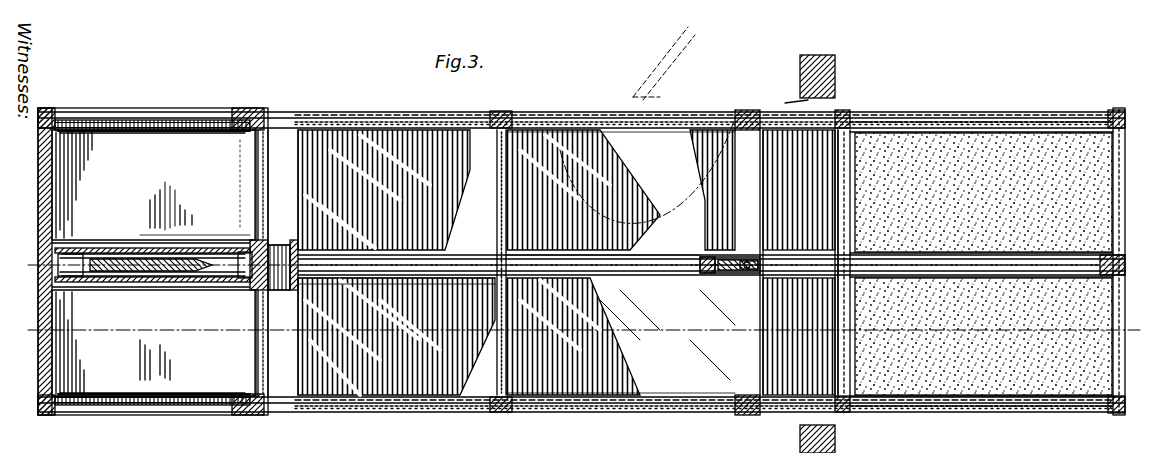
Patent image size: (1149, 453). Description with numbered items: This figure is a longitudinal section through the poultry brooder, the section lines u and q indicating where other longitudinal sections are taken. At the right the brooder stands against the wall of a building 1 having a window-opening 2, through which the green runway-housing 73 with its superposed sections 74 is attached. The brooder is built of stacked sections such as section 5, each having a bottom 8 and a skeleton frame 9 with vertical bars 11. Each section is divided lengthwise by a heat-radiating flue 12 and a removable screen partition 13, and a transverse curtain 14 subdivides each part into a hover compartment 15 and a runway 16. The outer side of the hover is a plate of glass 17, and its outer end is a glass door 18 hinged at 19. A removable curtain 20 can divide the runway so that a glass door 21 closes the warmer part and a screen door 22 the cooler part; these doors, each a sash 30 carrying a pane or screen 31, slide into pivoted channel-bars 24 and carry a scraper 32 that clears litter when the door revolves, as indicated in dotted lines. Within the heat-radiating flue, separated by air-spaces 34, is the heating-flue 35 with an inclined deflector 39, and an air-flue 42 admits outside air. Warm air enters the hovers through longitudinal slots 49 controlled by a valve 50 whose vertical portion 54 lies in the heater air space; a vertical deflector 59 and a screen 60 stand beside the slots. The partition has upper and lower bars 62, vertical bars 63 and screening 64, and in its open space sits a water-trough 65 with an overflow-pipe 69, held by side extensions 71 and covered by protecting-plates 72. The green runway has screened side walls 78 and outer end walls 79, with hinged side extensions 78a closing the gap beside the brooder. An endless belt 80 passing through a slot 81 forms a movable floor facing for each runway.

The wall of a building 1 is at (800, 62).
The window-opening 2 is at (788, 97).
The superposed section 5 is at (262, 110).
The bottom 8 is at (232, 185).
The skeleton frame 9 is at (745, 110).
The vertical bars 11 is at (60, 112).
The heat-radiating flue 12 is at (200, 282).
The removable screen partition 13 is at (424, 278).
The transverse curtain 14 is at (245, 178).
The hover compartment 15 is at (166, 285).
The runway 16 is at (396, 292).
The plate of glass 17 is at (152, 120).
The glass door 18 is at (56, 184).
The hinge 19 is at (40, 130).
The removable curtain 20 is at (506, 228).
The glass door 21 is at (378, 130).
The screen door 22 is at (620, 428).
The channel-bars 24 is at (338, 112).
The frame or sash 30 is at (497, 111).
The pane of glass or screen 31 is at (413, 113).
The scraper 32 is at (466, 130).
The air-spaces 34 is at (85, 248).
The heating-flue 35 is at (110, 258).
The inclined deflector 39 is at (80, 276).
The air-flue 42 is at (396, 285).
The longitudinal slots 49 is at (200, 120).
The valve 50 is at (236, 280).
The vertical portion of valve 54 is at (195, 225).
The vertical deflector 59 is at (173, 130).
The screen 60 is at (115, 130).
The upper and lower bars 62 is at (572, 275).
The vertical bars 63 is at (286, 260).
The screening 64 is at (644, 275).
The water-trough 65 is at (742, 260).
The overflow-pipe 69 is at (748, 273).
The side extensions 71 is at (710, 257).
The protecting-plates 72 is at (722, 257).
The green runway-housing 73 is at (981, 357).
The superposed sections of runway-housing 74 is at (1058, 412).
The side walls 78 is at (966, 118).
The side extensions 78a is at (804, 270).
The outer end walls 79 is at (1113, 192).
The endless belt 80 is at (621, 292).
The slot 81 is at (298, 188).
The section line u u is at (567, 273).
The section line q q is at (577, 330).